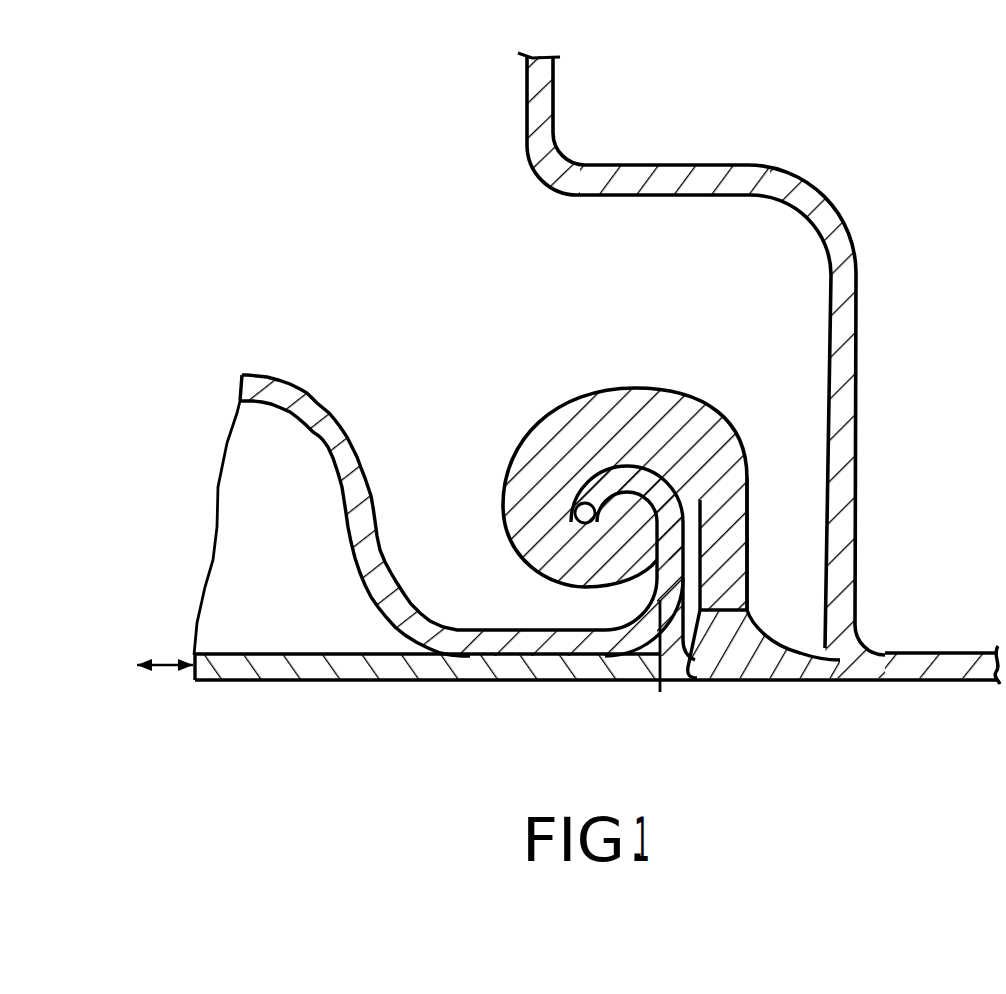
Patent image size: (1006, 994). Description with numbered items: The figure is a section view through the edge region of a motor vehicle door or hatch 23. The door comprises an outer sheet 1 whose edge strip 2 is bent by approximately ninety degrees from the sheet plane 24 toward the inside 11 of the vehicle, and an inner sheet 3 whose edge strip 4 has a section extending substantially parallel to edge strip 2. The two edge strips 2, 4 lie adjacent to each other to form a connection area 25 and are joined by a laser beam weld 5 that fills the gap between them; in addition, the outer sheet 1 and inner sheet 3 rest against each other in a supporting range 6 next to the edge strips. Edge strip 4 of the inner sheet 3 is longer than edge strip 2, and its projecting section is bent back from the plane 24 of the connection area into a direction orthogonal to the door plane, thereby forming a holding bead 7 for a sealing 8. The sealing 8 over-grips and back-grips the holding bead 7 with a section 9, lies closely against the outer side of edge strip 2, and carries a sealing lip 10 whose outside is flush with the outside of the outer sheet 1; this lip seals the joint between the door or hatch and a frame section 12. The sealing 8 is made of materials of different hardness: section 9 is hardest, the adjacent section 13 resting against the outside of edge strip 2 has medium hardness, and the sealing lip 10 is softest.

The outer sheet 1 is at (519, 676).
The edge strip 2 is at (710, 548).
The inner sheet 3 is at (368, 566).
The edge strip 4 is at (668, 512).
The laser beam weld 5 is at (660, 692).
The supporting range 6 is at (563, 710).
The holding bead 7 is at (550, 420).
The sealing 8 is at (639, 372).
The section 9 is at (512, 523).
The sealing lip 10 is at (783, 673).
The inside 11 is at (787, 423).
The frame section 12 is at (847, 367).
The section 13 is at (733, 590).
The motor vehicle door or hatch 23 is at (263, 470).
The sheet plane 24 is at (165, 667).
The connection area 25 is at (635, 592).